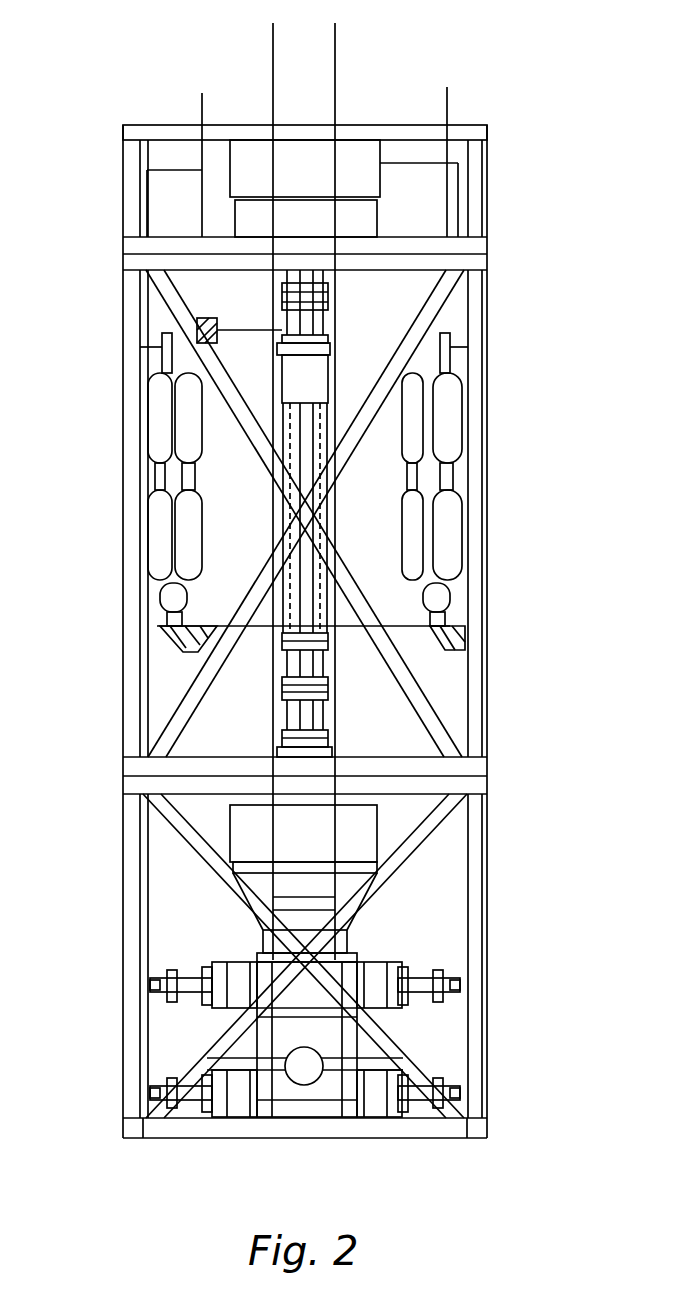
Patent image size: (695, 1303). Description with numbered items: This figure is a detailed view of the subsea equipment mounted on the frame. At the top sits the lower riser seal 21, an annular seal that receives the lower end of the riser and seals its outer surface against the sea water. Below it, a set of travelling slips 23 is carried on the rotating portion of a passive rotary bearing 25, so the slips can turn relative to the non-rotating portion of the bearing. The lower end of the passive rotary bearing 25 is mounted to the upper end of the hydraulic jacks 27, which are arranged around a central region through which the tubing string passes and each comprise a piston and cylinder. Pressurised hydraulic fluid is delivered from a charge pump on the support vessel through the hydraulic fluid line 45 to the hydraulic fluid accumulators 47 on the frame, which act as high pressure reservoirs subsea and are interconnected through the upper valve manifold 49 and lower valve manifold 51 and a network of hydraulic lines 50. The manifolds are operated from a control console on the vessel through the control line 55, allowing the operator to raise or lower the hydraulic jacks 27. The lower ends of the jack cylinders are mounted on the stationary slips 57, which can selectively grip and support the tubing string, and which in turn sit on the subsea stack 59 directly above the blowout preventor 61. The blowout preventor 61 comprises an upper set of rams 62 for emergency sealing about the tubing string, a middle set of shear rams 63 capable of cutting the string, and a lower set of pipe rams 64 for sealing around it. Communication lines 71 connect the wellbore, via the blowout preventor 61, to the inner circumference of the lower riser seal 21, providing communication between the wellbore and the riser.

The lower riser seal 21 is at (352, 155).
The travelling slips 23 is at (323, 297).
The passive rotary bearing 25 is at (317, 373).
The hydraulic jacks 27 is at (330, 443).
The hydraulic fluid line 45 is at (447, 102).
The hydraulic fluid accumulators 47 is at (418, 512).
The upper valve manifold 49 is at (185, 318).
The hydraulic lines 50 is at (458, 328).
The lower valve manifold 51 is at (193, 640).
The control line 55 is at (202, 110).
The stationary slips 57 is at (327, 700).
The subsea stack 59 is at (363, 832).
The blowout preventor 61 is at (322, 1032).
The upper set of rams 62 is at (373, 982).
The shear rams 63 is at (368, 1045).
The pipe rams 64 is at (357, 1100).
The communication lines 71 is at (463, 698).